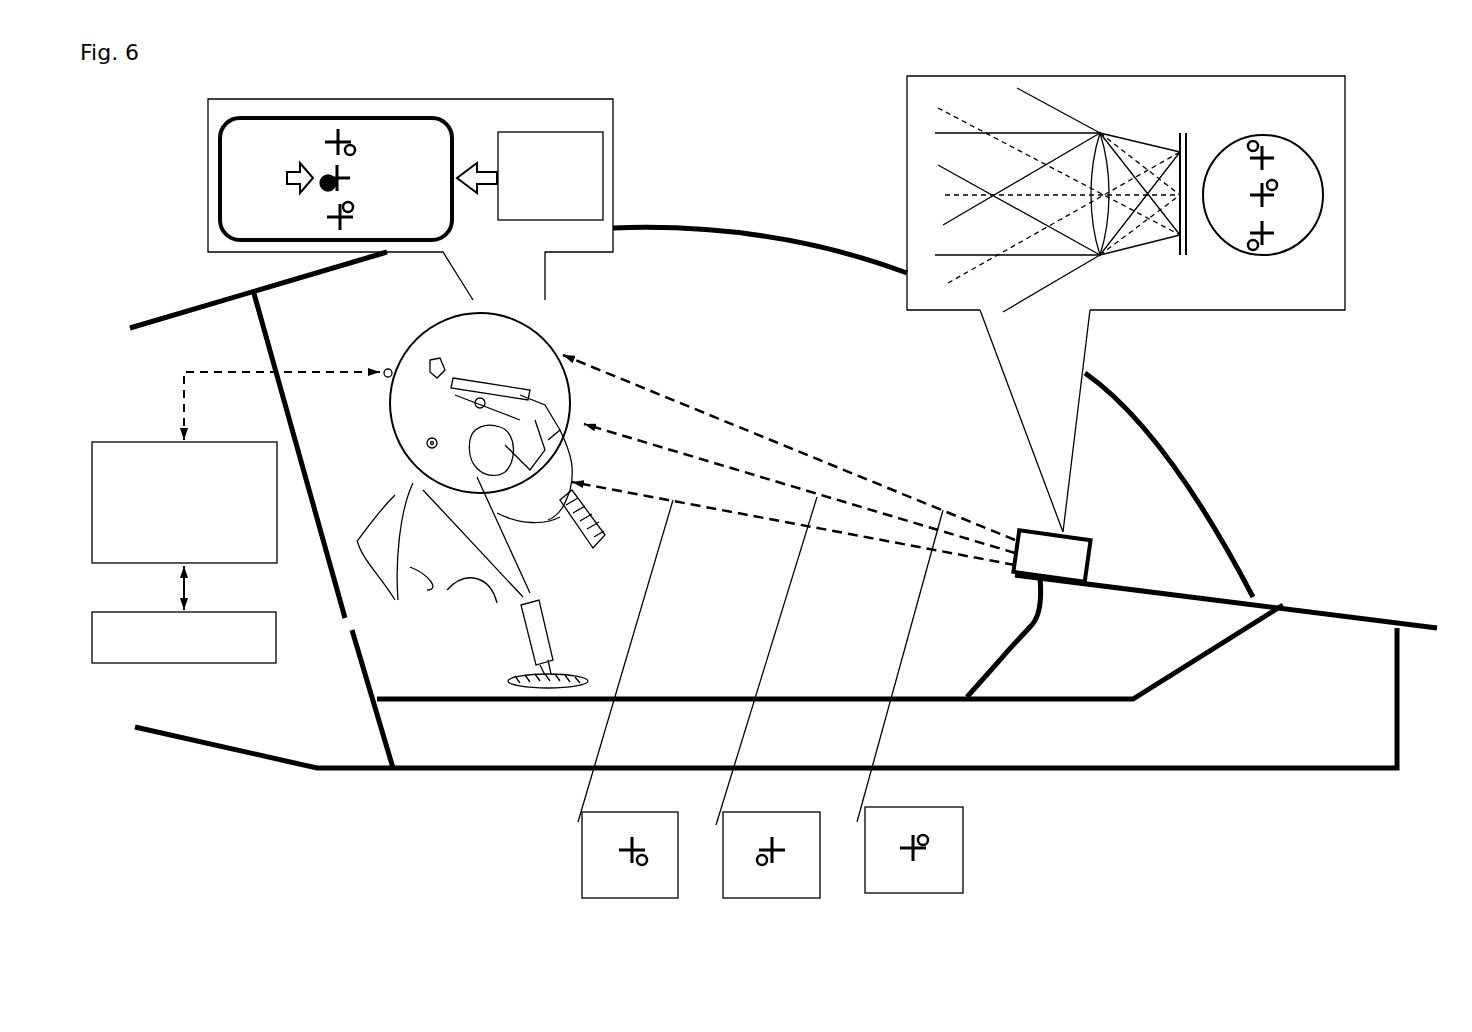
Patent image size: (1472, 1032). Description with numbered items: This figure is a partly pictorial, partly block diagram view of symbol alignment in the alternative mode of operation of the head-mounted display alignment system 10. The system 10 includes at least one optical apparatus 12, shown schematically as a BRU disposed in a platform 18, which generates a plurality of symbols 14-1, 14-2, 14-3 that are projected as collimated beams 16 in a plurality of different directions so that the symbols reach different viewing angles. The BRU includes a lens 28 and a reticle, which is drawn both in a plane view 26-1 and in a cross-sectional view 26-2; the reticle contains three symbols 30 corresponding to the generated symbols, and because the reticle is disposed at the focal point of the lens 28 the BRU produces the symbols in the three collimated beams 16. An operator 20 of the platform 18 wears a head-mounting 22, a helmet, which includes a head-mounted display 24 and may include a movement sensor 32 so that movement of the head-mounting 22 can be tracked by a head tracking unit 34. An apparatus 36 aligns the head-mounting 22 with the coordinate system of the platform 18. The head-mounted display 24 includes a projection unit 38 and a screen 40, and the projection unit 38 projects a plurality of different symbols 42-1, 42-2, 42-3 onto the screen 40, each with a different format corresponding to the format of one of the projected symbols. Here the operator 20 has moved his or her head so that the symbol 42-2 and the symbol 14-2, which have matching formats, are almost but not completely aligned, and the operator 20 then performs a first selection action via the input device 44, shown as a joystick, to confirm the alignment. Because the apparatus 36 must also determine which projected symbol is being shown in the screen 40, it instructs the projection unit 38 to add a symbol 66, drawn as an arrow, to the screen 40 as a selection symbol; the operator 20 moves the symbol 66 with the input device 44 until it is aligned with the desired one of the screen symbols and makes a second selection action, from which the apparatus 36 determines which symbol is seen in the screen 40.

The head-mounted display alignment system 10 is at (768, 155).
The optical apparatus 12 is at (1088, 560).
The symbol 14-1 is at (613, 862).
The symbol 14-2 is at (782, 868).
The symbol 14-3 is at (930, 861).
The collimated beams 16 is at (700, 500).
The platform 18 is at (743, 227).
The operator 20 is at (403, 450).
The head-mounting 22 is at (433, 323).
The head-mounted display 24 is at (578, 398).
The reticle (plane view) 26-1 is at (1327, 193).
The reticle (cross-sectional view) 26-2 is at (1185, 257).
The lens 28 is at (1100, 257).
The symbols 30 is at (1281, 250).
The movement sensor 32 is at (387, 368).
The head tracking unit 34 is at (152, 440).
The apparatus 36 is at (183, 663).
The projection unit 38 is at (602, 177).
The screen 40 is at (210, 178).
The symbol 42-1 is at (313, 133).
The symbol 42-2 is at (357, 166).
The symbol 42-3 is at (360, 203).
The input device 44 is at (550, 630).
The symbol 66 is at (287, 179).